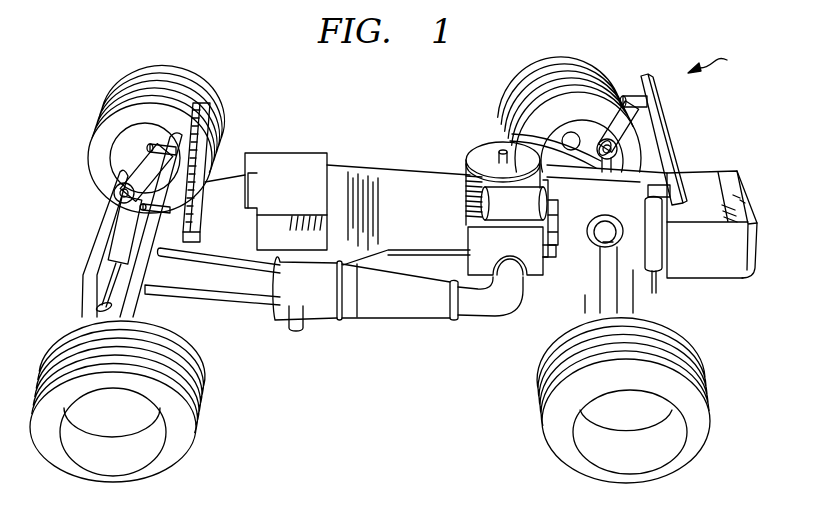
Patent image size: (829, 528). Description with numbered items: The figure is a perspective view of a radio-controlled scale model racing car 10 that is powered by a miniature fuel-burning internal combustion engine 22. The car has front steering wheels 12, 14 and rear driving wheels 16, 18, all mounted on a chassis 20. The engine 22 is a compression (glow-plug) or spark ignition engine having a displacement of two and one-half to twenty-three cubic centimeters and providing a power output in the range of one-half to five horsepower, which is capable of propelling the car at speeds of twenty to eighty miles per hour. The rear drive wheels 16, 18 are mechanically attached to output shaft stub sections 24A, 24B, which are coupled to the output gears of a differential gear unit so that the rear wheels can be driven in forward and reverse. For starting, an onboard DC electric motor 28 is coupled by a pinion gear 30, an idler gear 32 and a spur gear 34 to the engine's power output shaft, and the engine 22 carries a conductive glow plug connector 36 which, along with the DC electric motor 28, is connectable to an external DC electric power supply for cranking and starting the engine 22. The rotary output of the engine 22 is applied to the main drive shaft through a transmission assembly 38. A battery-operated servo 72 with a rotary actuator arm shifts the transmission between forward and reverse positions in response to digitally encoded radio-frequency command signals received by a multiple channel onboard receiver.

The scale model racing car 10 is at (722, 62).
The front steering wheel 12 is at (200, 378).
The front steering wheel 14 is at (145, 68).
The rear driving wheel 16 is at (697, 352).
The rear driving wheel 18 is at (587, 58).
The chassis 20 is at (393, 178).
The internal combustion engine 22 is at (467, 170).
The output shaft stub section 24A is at (617, 287).
The output shaft stub section 24B is at (567, 133).
The DC electric motor 28 is at (467, 215).
The pinion gear 30 is at (445, 252).
The idler gear 32 is at (557, 217).
The spur gear 34 is at (549, 252).
The glow plug connector 36 is at (500, 152).
The transmission assembly 38 is at (633, 183).
The servo 72 is at (702, 172).